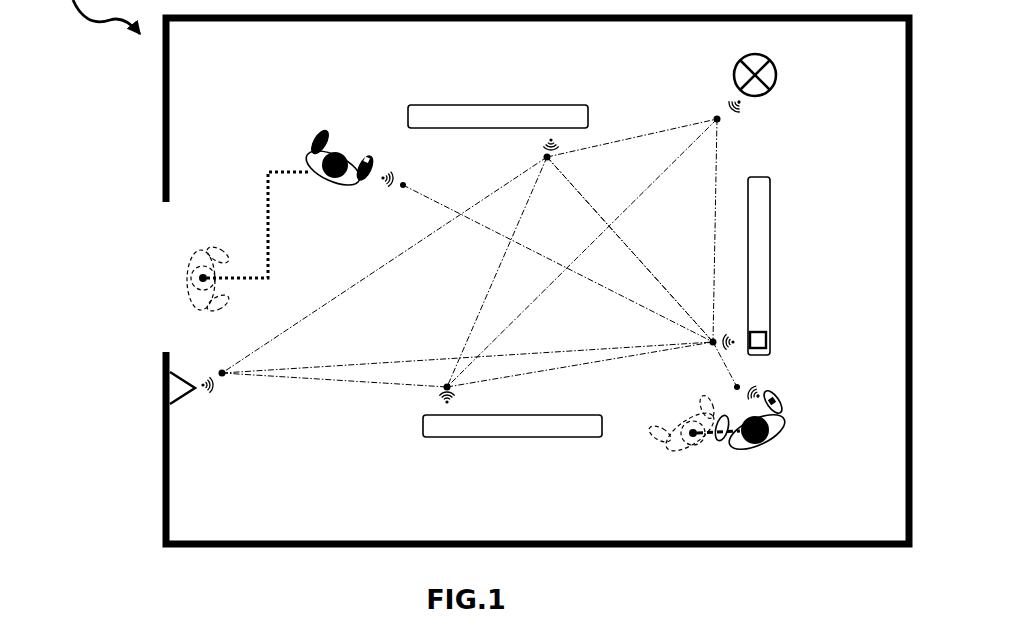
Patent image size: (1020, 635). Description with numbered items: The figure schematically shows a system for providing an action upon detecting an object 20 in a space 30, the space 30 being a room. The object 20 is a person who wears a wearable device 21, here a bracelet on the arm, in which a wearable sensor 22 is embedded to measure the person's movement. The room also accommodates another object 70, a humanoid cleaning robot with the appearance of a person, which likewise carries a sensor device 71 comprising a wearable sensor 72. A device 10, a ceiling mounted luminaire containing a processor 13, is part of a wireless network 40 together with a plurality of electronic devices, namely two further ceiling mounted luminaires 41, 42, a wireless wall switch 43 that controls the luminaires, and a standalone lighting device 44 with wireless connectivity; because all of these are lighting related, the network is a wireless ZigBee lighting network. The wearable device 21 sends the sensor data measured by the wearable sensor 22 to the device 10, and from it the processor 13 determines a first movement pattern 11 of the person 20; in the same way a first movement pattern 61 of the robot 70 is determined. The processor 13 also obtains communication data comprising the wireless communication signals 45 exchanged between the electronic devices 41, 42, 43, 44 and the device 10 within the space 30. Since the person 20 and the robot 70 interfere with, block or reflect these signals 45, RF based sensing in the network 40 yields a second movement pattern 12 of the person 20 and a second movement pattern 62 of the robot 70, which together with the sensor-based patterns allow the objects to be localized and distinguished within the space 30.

The space 30 is at (152, 94).
The object 20 is at (312, 133).
The wearable device 21 is at (355, 136).
The wearable sensor 22 is at (360, 155).
The first movement pattern 11 is at (247, 240).
The second movement pattern 12 is at (261, 228).
The device 10 is at (782, 281).
The processor 13 is at (770, 340).
The wireless network 40 is at (496, 254).
The luminaire 41 is at (492, 101).
The luminaire 42 is at (500, 441).
The wireless wall switch 43 is at (190, 404).
The standalone lighting device 44 is at (792, 75).
The wireless communication signals 45 is at (568, 272).
The another object 70 is at (799, 450).
The sensor device 71 is at (815, 420).
The wearable sensor 72 is at (789, 404).
The first movement pattern 61 is at (701, 451).
The second movement pattern 62 is at (717, 444).